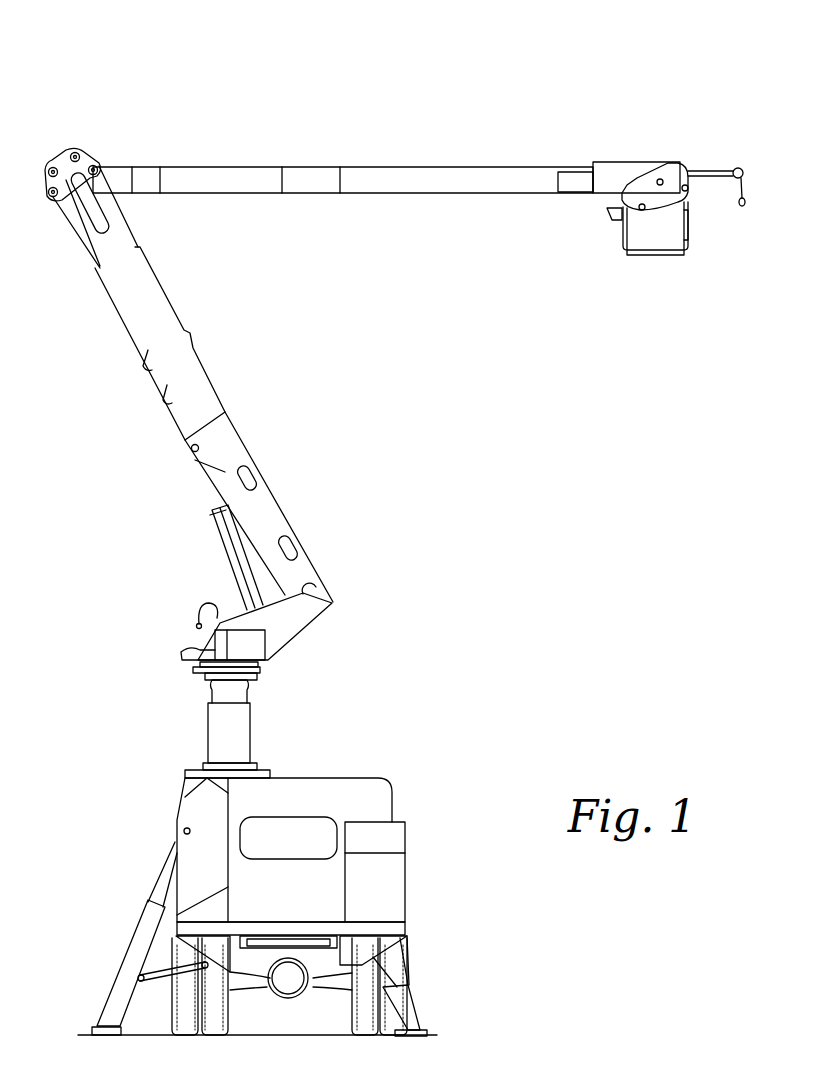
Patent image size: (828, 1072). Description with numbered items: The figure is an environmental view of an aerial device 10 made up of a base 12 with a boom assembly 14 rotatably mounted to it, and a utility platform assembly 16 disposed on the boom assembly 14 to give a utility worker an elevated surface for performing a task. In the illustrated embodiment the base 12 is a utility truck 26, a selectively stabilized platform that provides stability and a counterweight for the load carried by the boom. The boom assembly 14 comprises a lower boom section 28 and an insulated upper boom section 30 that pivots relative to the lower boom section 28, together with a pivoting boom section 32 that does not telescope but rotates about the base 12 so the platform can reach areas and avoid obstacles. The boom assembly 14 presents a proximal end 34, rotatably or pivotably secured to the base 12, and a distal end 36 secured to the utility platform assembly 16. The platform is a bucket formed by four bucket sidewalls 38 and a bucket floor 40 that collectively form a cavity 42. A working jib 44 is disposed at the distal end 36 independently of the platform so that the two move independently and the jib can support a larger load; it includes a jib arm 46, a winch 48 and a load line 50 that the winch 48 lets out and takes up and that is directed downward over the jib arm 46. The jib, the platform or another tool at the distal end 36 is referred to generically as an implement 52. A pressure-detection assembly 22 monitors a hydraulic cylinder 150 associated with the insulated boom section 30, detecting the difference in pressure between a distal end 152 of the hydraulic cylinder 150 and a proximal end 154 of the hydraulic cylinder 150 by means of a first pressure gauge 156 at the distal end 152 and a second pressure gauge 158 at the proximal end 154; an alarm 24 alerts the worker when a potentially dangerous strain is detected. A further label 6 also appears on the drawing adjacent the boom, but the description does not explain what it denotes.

The aerial device 10 is at (115, 112).
The base 12 is at (312, 760).
The boom assembly 14 is at (388, 362).
The utility platform assembly 16 is at (712, 288).
The pressure-detection assembly 22 is at (93, 558).
The alarm 24 is at (460, 890).
The utility truck 26 is at (392, 782).
The lower boom section 28 is at (222, 397).
The upper boom section 30 is at (380, 155).
The pivoting boom section 32 is at (320, 634).
The proximal end 34 is at (143, 643).
The distal end 36 is at (615, 142).
The bucket sidewalls 38 is at (606, 228).
The bucket floor 40 is at (655, 272).
The cavity 42 is at (642, 168).
The working jib 44 is at (697, 158).
The jib arm 46 is at (720, 167).
The winch 48 is at (740, 158).
The load line 50 is at (750, 192).
The implement 52 is at (682, 83).
The boom tip link 6 is at (130, 348).
The hydraulic cylinder 150 is at (202, 555).
The distal end of hydraulic cylinder 152 is at (185, 475).
The proximal end of hydraulic cylinder 154 is at (228, 597).
The first pressure gauge 156 is at (212, 527).
The second pressure gauge 158 is at (262, 588).